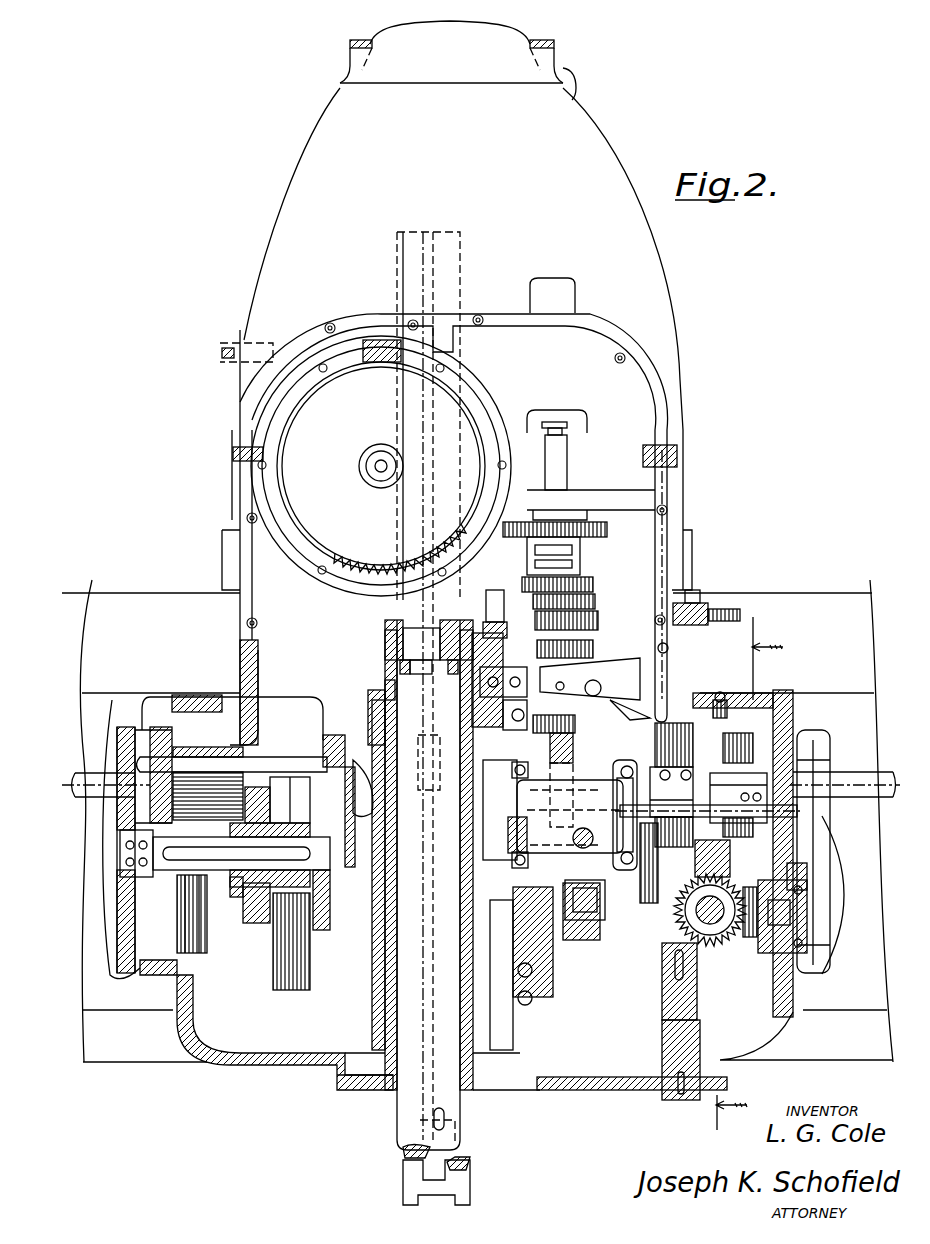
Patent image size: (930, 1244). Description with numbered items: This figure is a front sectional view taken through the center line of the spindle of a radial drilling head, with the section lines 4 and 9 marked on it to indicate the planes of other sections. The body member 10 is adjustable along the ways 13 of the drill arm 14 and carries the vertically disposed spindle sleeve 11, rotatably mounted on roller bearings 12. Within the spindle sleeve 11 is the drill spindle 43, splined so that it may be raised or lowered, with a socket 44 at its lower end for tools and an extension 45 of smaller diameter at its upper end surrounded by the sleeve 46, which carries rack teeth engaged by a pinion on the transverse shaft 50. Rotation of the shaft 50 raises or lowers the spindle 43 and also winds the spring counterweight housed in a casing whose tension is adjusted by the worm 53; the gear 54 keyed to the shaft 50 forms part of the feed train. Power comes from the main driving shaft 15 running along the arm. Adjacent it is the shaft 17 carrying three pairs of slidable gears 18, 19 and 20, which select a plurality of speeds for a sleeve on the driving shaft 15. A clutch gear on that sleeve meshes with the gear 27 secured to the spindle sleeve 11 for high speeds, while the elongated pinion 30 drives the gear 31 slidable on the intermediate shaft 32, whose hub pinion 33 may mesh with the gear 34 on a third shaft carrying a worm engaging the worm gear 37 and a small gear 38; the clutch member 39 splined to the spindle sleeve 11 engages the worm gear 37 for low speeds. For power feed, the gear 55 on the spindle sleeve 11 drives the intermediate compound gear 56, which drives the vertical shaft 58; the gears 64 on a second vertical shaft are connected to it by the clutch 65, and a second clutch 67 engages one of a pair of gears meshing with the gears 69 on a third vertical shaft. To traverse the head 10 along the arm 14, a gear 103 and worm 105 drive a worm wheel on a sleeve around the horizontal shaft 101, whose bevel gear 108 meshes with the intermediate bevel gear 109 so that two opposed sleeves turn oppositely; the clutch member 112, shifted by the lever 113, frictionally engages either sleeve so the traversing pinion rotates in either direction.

The propeller shaft / section line 4 is at (97, 772).
The section line 9 is at (752, 873).
The body member 10 is at (642, 298).
The spindle sleeve 11 is at (403, 760).
The bearings 12 is at (372, 705).
The ways 13 is at (176, 602).
The drill arm 14 is at (110, 980).
The main driving shaft 15 is at (818, 853).
The shaft 17 is at (770, 760).
The slidable gears 18 is at (740, 733).
The slidable gears 19 is at (675, 723).
The slidable gears 20 is at (601, 840).
The gear 27 is at (358, 782).
The elongated pinion 30 is at (214, 788).
The gear 31 is at (262, 925).
The intermediate shaft 32 is at (165, 840).
The pinion 33 is at (305, 830).
The gear 34 is at (292, 995).
The worm gear 37 is at (540, 950).
The small gear 38 is at (195, 930).
The clutch member 39 is at (556, 812).
The drill spindle 43 is at (412, 1092).
The socket 44 is at (470, 1172).
The extension 45 is at (432, 640).
The sleeve 46 is at (396, 645).
The shaft 50 is at (376, 458).
The worm 53 is at (378, 338).
The gear 54 is at (336, 565).
The gear 55 is at (385, 665).
The intermediate compound gear 56 is at (486, 602).
The vertical shaft 58 is at (560, 458).
The gears 64 is at (598, 620).
The clutch 65 is at (545, 540).
The second clutch 67 is at (580, 648).
The gears 69 is at (580, 680).
The horizontal shaft 101 is at (752, 852).
The gear 103 is at (660, 880).
The worm 105 is at (695, 895).
The bevel gear 108 is at (712, 946).
The intermediate bevel gear 109 is at (752, 940).
The clutch member 112 is at (685, 928).
The lever 113 is at (665, 1097).